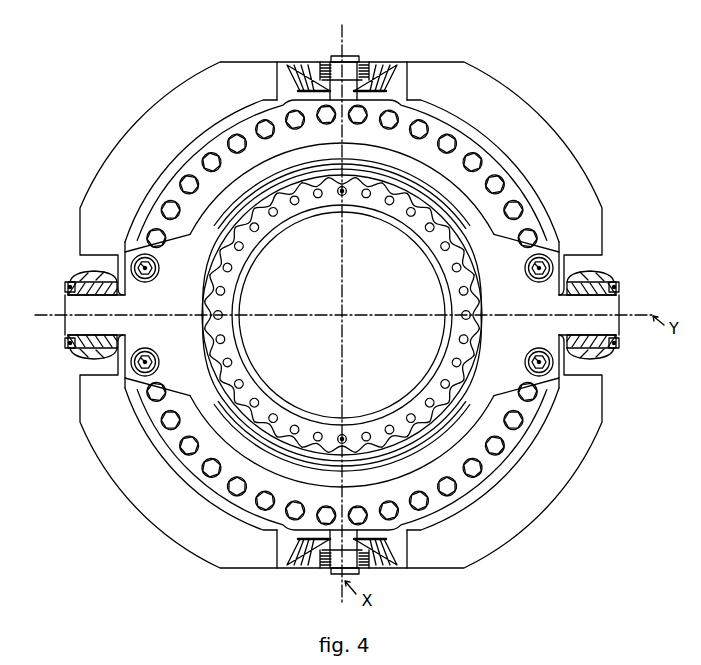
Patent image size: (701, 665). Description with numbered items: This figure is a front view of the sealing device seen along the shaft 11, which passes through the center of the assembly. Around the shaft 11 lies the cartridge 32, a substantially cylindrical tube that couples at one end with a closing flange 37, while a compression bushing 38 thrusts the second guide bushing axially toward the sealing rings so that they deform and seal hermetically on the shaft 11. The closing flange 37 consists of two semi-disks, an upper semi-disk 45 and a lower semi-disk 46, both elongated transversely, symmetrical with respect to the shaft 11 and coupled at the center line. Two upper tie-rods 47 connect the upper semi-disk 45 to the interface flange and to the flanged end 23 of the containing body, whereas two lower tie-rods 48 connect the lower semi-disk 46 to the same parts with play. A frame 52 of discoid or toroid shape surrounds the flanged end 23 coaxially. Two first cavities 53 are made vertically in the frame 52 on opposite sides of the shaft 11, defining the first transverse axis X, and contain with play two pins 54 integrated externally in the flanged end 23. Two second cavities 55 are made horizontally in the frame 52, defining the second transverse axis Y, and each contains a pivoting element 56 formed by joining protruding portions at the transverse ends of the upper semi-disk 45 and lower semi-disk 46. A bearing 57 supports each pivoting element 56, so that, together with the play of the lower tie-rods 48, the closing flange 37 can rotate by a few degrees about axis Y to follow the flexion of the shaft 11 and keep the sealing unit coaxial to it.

The shaft 11 is at (309, 283).
The flanged end 23 is at (487, 455).
The cartridge 32 is at (248, 396).
The closing flange 37 is at (218, 424).
The compression bushing 38 is at (226, 281).
The upper semi-disk 45 is at (474, 246).
The lower semi-disk 46 is at (478, 385).
The upper tie-rods 47 is at (136, 259).
The lower tie-rods 48 is at (156, 358).
The frame 52 is at (545, 133).
The first cavities 53 is at (350, 58).
The pins 54 is at (337, 77).
The second cavities 55 is at (82, 278).
The pivoting element 56 is at (79, 309).
The bearing 57 is at (98, 365).